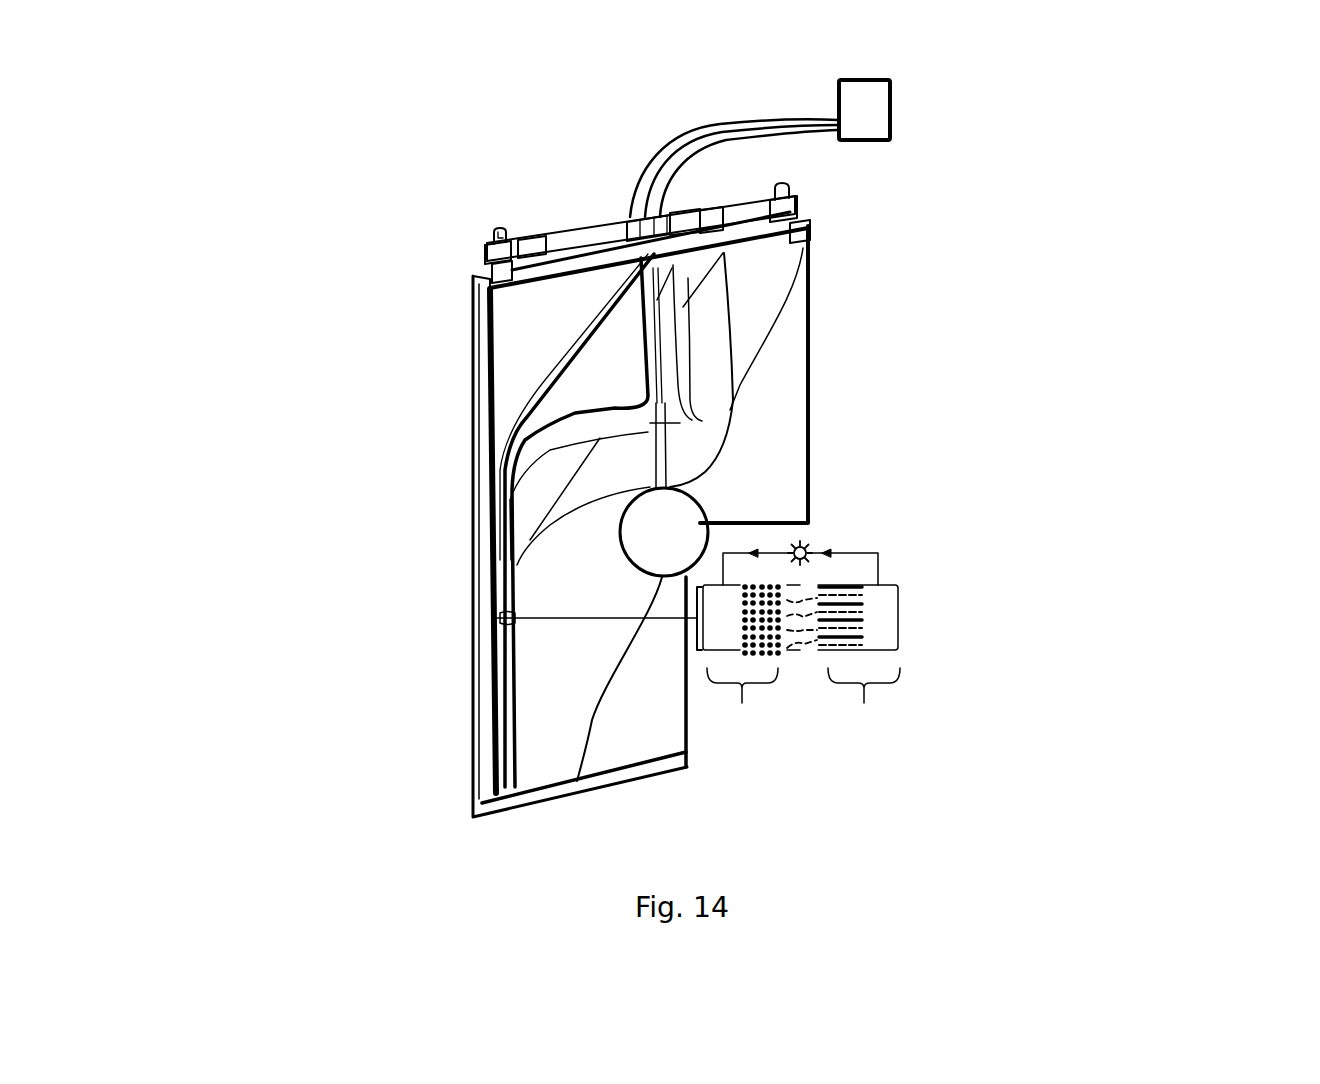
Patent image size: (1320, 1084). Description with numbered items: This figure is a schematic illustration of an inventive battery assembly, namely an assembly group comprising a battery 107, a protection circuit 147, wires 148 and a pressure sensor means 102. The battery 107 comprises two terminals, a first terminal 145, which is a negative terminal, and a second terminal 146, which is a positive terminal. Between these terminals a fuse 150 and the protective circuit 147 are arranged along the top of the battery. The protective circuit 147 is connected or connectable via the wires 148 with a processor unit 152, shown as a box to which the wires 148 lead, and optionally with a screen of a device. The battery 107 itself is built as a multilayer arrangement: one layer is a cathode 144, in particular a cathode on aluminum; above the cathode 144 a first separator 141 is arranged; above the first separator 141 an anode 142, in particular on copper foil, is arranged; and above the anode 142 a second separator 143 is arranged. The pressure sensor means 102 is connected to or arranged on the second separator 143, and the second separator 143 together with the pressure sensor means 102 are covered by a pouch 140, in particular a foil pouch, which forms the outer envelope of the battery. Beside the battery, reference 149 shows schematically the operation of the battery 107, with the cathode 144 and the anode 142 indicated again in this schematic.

The battery 107 is at (386, 524).
The pressure sensor means 102 is at (677, 525).
The pouch 140 is at (790, 457).
The first separator 141 is at (605, 373).
The anode 142 is at (678, 308).
The second separator 143 is at (703, 432).
The cathode 144 is at (532, 303).
The first terminal 145 is at (792, 204).
The second terminal 146 is at (485, 253).
The protection circuit 147 is at (632, 216).
The wires 148 is at (664, 168).
The operation of the battery 149 is at (810, 548).
The fuse 150 is at (525, 245).
The processor unit 152 is at (891, 120).